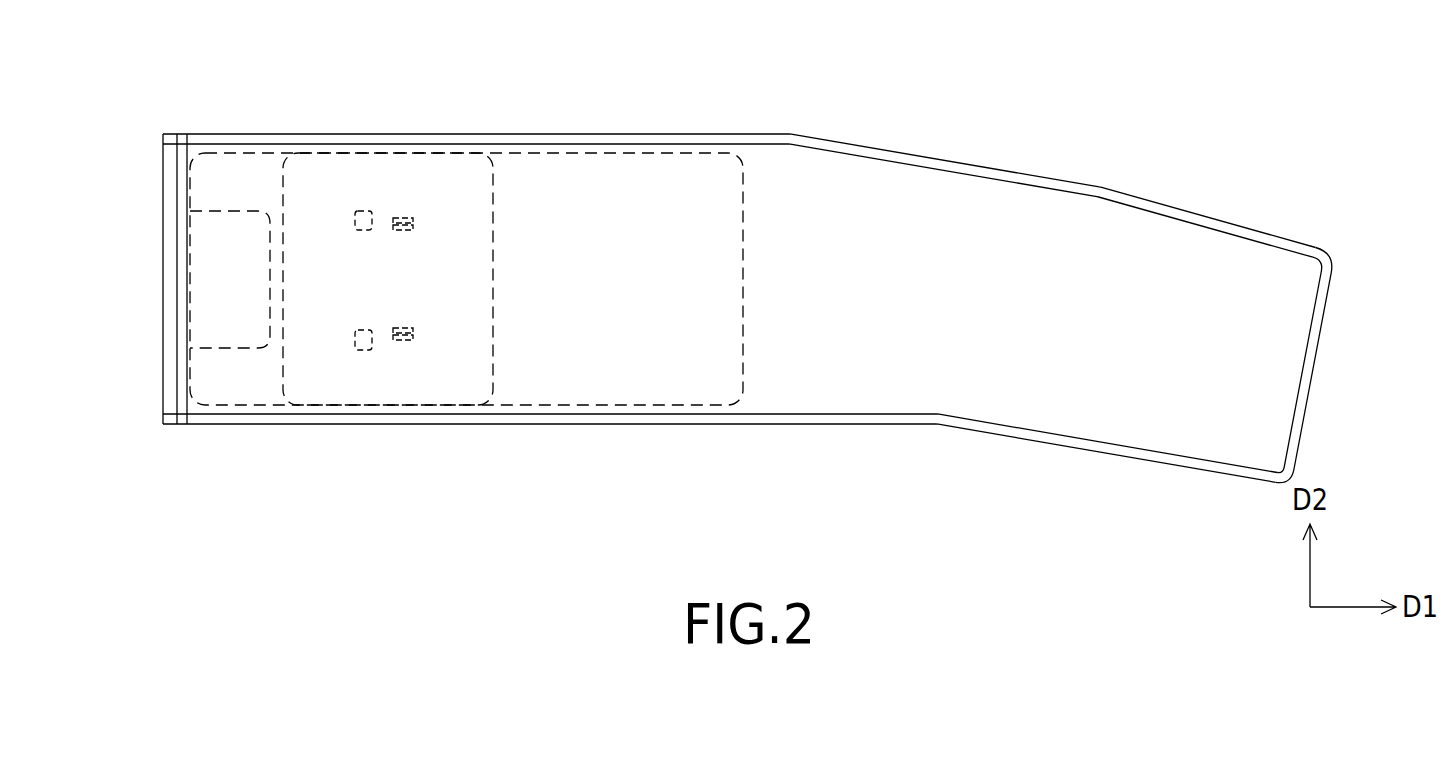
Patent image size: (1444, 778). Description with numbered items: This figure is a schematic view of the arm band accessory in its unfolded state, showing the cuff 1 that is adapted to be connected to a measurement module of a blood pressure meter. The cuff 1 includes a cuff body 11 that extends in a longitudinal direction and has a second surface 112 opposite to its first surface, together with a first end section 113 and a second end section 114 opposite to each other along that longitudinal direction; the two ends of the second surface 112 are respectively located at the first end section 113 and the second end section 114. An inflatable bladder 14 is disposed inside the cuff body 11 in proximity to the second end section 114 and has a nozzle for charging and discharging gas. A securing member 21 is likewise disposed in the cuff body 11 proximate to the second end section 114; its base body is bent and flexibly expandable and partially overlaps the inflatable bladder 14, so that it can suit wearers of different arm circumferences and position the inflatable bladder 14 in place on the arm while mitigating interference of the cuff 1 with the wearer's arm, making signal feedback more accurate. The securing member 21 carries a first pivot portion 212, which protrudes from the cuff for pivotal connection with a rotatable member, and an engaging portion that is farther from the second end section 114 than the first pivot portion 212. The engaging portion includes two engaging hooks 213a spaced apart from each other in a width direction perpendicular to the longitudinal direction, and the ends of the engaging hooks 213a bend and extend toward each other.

The cuff 1 is at (552, 108).
The cuff body 11 is at (1070, 452).
The second surface 112 is at (879, 175).
The first end section 113 is at (1315, 380).
The second end section 114 is at (162, 287).
The inflatable bladder 14 is at (585, 360).
The securing member 21 is at (243, 377).
The first pivot portion 212 is at (366, 328).
The engaging hooks 213a is at (407, 218).